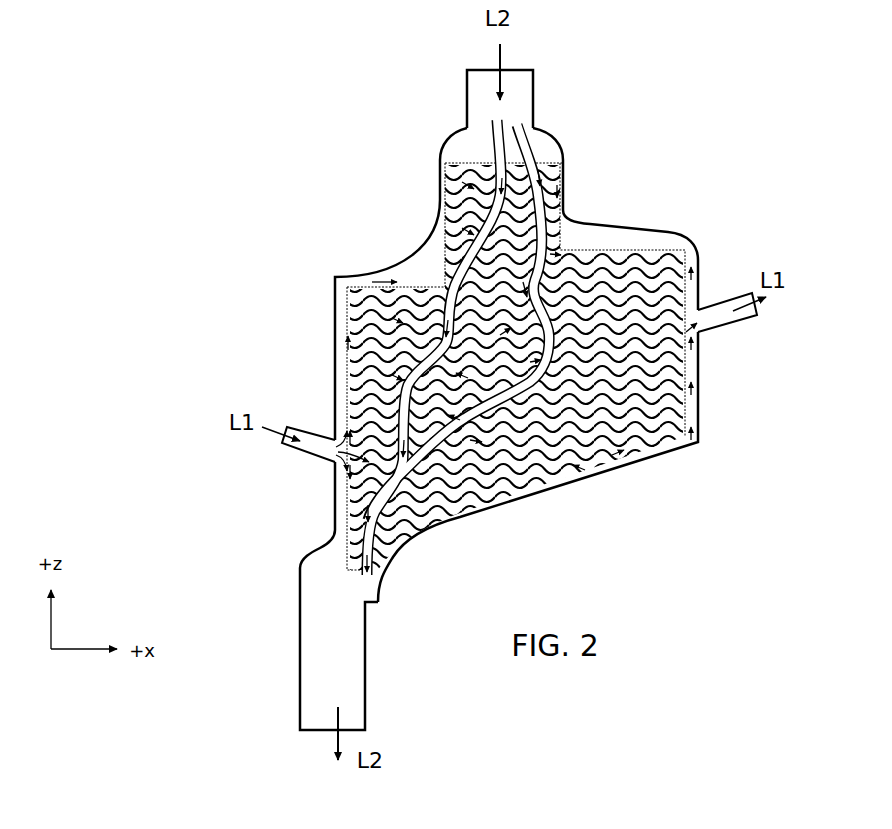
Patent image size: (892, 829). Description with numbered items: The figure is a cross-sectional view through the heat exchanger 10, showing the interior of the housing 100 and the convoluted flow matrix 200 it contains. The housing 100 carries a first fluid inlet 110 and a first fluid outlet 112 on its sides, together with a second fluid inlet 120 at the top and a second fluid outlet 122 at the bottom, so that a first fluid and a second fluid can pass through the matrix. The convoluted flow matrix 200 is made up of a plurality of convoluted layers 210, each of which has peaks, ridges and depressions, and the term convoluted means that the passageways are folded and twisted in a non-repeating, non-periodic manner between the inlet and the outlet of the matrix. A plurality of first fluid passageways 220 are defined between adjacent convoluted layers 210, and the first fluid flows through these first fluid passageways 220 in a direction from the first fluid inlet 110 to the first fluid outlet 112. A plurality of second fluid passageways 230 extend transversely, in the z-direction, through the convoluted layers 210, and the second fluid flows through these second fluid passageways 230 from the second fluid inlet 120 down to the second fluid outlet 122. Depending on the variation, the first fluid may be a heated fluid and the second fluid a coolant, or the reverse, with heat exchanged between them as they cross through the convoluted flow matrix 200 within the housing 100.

The heat exchanger 10 is at (680, 99).
The housing 100 is at (686, 226).
The first fluid inlet 110 is at (288, 454).
The first fluid outlet 112 is at (752, 326).
The second fluid inlet 120 is at (542, 88).
The second fluid outlet 122 is at (294, 712).
The convoluted flow matrix 200 is at (625, 238).
The convoluted layers 210 is at (712, 380).
The first fluid passageways 220 is at (460, 160).
The second fluid passageways 230 is at (470, 273).